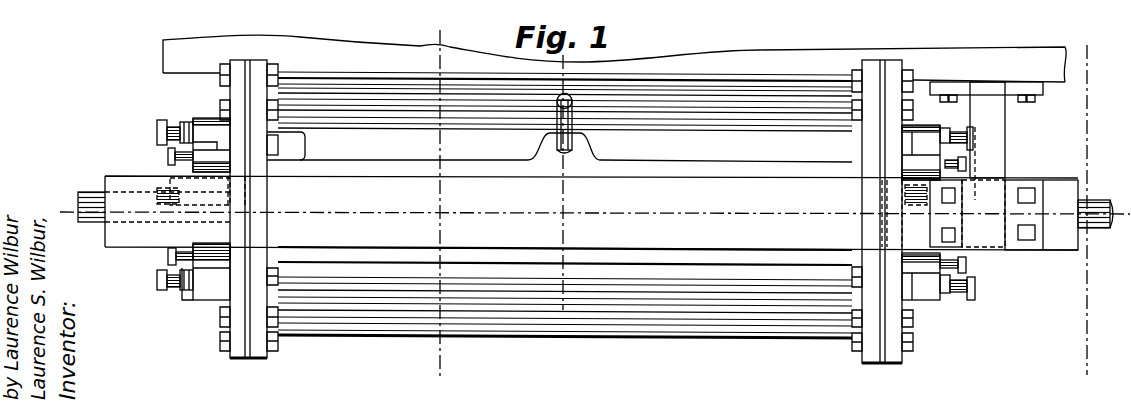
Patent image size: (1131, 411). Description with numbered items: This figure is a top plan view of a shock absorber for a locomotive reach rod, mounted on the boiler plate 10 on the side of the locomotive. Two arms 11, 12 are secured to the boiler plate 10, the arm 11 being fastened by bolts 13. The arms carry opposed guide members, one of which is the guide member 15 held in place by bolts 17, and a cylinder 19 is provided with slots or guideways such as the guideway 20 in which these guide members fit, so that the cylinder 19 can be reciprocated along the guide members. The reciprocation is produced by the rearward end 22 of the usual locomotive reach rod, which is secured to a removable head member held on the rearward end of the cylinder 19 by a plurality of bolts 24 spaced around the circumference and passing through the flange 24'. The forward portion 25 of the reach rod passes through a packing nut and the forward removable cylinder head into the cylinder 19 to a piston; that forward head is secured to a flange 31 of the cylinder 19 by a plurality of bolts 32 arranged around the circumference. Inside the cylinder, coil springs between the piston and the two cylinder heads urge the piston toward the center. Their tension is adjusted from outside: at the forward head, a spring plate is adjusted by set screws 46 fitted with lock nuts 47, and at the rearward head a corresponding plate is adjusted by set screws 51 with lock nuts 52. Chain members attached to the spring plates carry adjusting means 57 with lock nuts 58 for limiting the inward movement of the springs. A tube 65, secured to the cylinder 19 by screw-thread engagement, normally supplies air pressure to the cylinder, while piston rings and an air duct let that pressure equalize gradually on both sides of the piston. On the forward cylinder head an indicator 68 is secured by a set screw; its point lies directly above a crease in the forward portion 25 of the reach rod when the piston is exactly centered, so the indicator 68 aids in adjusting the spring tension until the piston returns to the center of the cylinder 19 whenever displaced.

The boiler plate 10 is at (163, 50).
The arm 11 is at (993, 116).
The arm 12 is at (564, 5).
The bolts 13 is at (1040, 100).
The guide member 15 is at (595, 213).
The bolts 17 is at (1026, 245).
The cylinder 19 is at (725, 318).
The slot or guideway 20 is at (680, 178).
The rearward end of locomotive reach rod 22 is at (90, 192).
The bolts 24 is at (223, 209).
The flange 24' is at (232, 128).
The forward portion of locomotive reach rod 25 is at (1087, 243).
The flange 31 is at (875, 358).
The bolts 32 is at (913, 344).
The set screws 46 is at (973, 140).
The lock nuts 47 is at (945, 128).
The set screws 51 is at (157, 128).
The lock nuts 52 is at (205, 125).
The adjusting means 57 is at (168, 156).
The lock nuts 58 is at (195, 166).
The tube 65 is at (572, 115).
The indicator 68 is at (1052, 200).